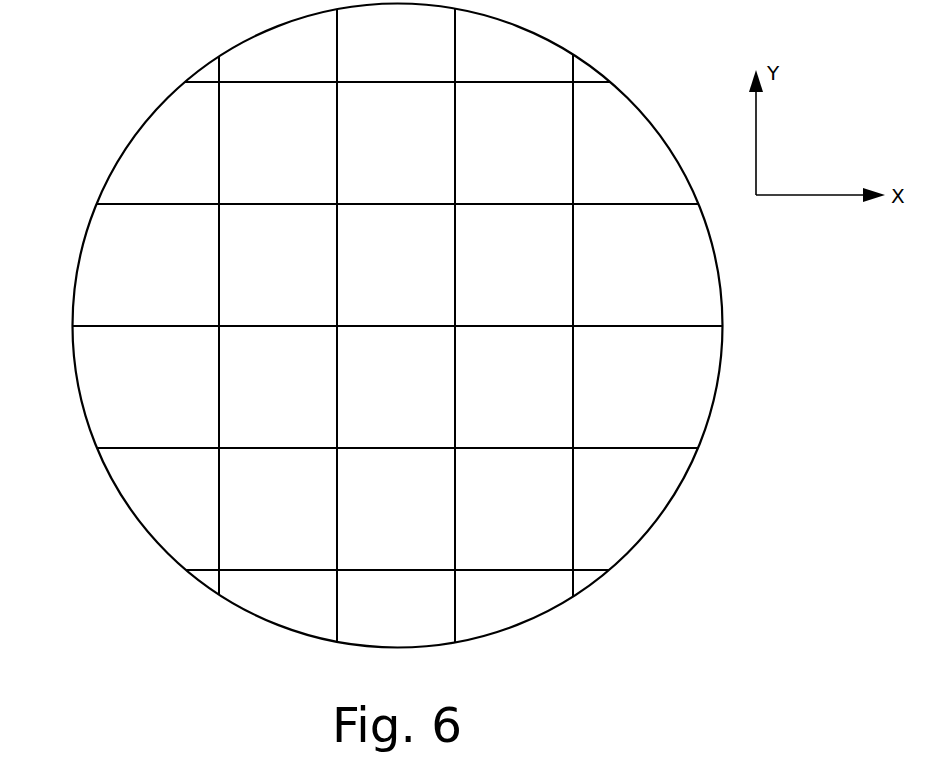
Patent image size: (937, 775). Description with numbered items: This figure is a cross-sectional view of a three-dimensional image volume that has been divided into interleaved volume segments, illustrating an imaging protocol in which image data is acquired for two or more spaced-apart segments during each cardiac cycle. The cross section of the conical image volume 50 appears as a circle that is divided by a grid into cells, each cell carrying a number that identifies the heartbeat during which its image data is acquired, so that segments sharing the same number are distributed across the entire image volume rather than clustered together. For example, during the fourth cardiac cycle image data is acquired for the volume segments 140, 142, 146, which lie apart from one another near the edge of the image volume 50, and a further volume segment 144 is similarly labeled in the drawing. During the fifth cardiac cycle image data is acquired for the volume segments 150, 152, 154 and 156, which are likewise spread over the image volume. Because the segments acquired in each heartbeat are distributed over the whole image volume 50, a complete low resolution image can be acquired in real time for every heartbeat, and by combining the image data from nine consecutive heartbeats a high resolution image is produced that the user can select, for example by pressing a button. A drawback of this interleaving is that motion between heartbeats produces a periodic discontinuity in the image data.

The conical image volume 50 is at (104, 119).
The volume segment 140 is at (125, 186).
The volume segment 142 is at (560, 128).
The partial exposure field at wafer edge 144 is at (138, 473).
The volume segment 146 is at (537, 527).
The volume segment 150 is at (248, 110).
The volume segment 152 is at (650, 183).
The volume segment 154 is at (248, 527).
The volume segment 156 is at (647, 473).